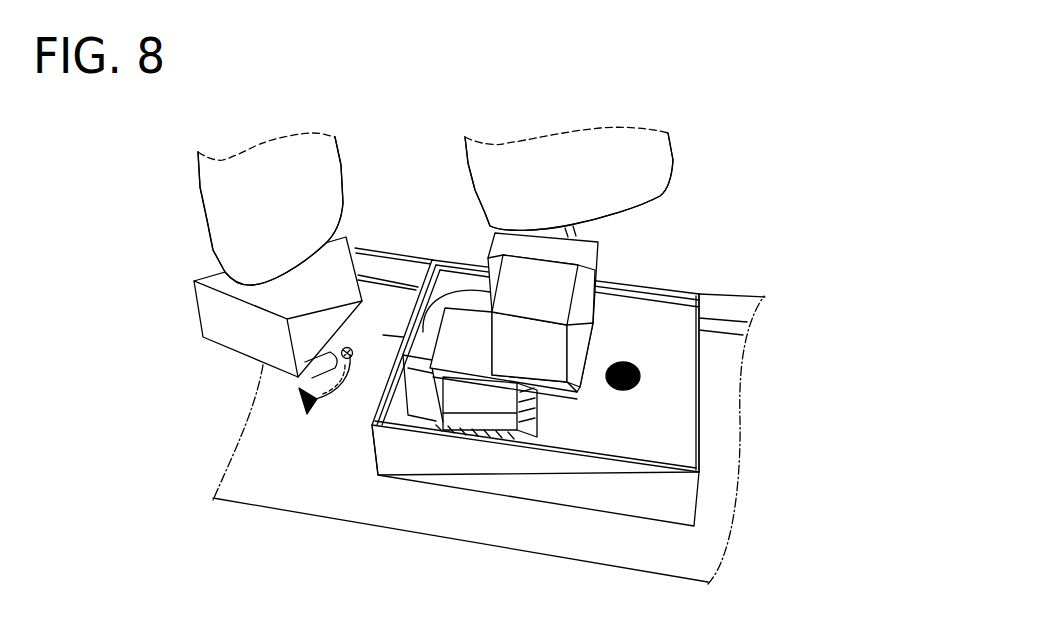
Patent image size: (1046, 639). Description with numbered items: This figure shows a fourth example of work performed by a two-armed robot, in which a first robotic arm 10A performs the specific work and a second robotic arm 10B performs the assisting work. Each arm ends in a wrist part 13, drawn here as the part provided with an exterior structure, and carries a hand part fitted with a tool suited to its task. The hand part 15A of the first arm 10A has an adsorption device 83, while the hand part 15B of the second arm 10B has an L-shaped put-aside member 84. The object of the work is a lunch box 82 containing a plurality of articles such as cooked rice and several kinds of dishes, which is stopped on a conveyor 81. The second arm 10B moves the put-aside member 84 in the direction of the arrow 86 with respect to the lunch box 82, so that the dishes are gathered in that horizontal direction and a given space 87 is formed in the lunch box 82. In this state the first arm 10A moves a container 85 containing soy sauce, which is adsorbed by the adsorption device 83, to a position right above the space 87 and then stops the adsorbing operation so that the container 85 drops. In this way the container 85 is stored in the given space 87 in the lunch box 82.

The first robotic arm 10A is at (180, 164).
The second robotic arm 10B is at (686, 137).
The wrist part 13 is at (203, 230).
The hand part of the first robotic arm 15A is at (190, 338).
The hand part of the second robotic arm 15B is at (471, 231).
The conveyor 81 is at (410, 515).
The lunch box 82 is at (560, 487).
The adsorption device 83 is at (248, 333).
The put-aside member 84 is at (465, 320).
The container containing soy sauce 85 is at (300, 393).
The arrow 86 is at (400, 350).
The space 87 is at (410, 406).